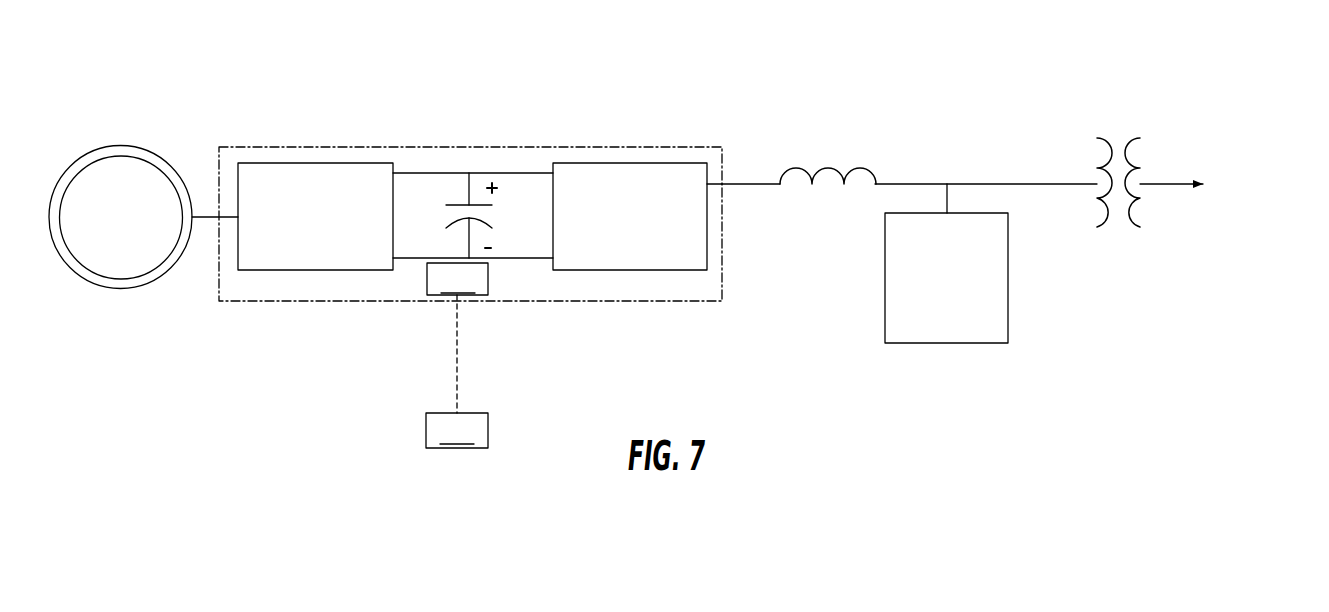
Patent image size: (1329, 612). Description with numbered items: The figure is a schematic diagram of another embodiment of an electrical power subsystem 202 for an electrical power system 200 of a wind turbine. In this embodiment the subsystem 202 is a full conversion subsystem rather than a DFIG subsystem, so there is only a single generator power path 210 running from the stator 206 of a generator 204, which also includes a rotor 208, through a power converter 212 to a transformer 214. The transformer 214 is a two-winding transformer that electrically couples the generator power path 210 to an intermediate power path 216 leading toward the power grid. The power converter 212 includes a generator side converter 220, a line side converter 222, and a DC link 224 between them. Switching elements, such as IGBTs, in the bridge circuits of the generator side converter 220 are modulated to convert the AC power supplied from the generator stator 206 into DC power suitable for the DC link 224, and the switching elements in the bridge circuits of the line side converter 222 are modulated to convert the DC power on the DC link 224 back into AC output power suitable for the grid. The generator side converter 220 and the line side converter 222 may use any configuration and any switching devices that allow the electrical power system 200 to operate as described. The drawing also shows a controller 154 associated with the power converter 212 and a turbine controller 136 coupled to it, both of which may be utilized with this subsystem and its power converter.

The electrical power system 200 is at (874, 57).
The electrical power subsystem 202 is at (470, 233).
The generator 204 is at (144, 169).
The stator 206 is at (128, 146).
The rotor 208 is at (88, 163).
The generator power path 210 is at (745, 183).
The power converter 212 is at (398, 303).
The transformer 214 is at (1126, 126).
The intermediate power path 216 is at (1160, 185).
The generator side converter 220 is at (364, 277).
The line side converter 222 is at (588, 273).
The DC link 224 is at (496, 259).
The controller 154 is at (457, 278).
The turbine controller 136 is at (457, 371).